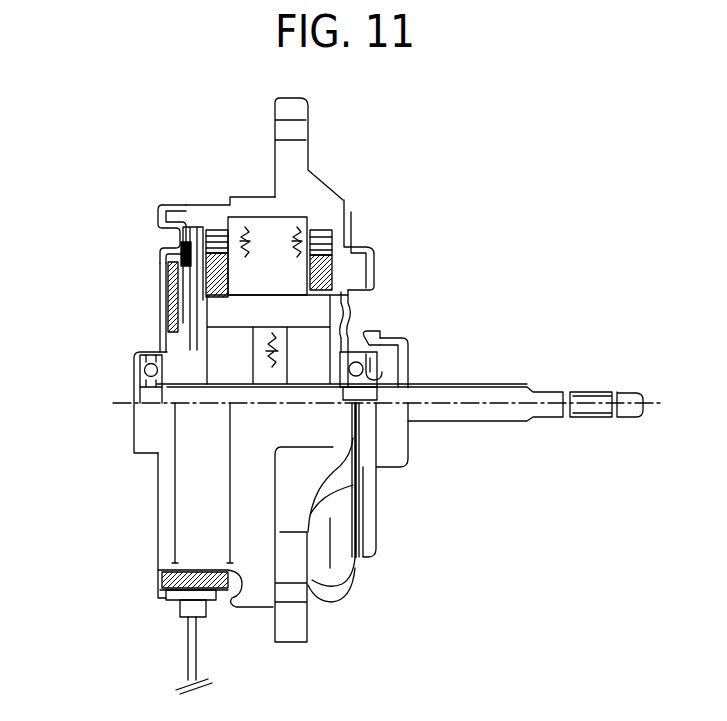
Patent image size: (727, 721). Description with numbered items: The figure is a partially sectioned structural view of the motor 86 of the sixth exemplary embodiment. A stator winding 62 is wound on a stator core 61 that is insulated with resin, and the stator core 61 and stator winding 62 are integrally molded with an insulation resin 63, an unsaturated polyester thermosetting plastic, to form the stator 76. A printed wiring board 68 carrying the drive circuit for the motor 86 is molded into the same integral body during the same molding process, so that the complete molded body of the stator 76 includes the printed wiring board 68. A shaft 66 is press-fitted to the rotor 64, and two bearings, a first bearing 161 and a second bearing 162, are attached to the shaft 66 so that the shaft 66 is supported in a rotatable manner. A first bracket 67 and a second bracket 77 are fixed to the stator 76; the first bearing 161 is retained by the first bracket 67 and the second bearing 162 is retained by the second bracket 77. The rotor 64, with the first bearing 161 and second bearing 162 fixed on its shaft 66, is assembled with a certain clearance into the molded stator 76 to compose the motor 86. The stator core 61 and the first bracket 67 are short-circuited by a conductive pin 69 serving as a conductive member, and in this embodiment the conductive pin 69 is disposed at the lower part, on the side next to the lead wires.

The stator core 61 is at (273, 240).
The stator winding 62 is at (192, 228).
The insulation resin 63 is at (290, 200).
The rotor 64 is at (280, 358).
The shaft 66 is at (458, 398).
The first bracket 67 is at (158, 258).
The printed wiring board 68 is at (165, 302).
The conductive pin 69 is at (160, 592).
The stator 76 is at (253, 208).
The second bracket 77 is at (342, 303).
The motor 86 is at (355, 233).
The first bearing 161 is at (138, 378).
The second bearing 162 is at (373, 364).